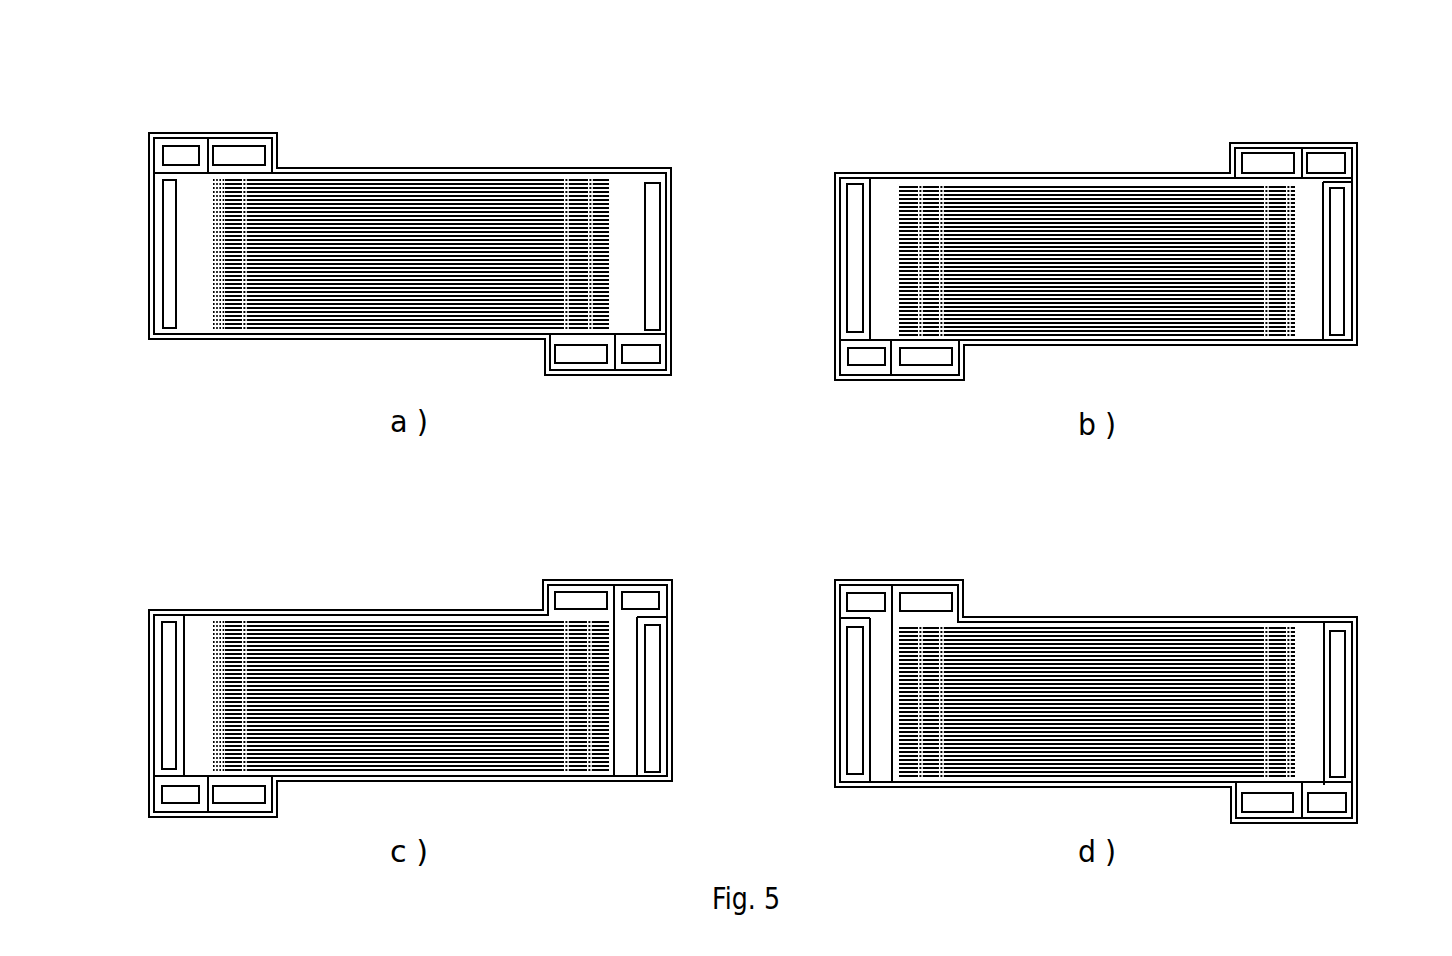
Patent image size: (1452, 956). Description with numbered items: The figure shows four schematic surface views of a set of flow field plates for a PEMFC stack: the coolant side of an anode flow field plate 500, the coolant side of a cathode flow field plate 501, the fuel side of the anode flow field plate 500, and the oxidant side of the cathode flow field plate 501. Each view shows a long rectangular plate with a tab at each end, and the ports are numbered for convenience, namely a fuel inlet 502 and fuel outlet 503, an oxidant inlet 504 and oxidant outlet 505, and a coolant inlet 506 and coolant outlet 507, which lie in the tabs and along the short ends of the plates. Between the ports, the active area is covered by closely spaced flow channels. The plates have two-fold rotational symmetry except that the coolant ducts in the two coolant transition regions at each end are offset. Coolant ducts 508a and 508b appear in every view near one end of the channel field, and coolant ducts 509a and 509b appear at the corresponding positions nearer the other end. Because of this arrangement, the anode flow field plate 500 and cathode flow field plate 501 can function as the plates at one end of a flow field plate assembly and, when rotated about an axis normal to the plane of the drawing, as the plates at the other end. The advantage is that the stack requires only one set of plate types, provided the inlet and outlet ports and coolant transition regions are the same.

The anode flow field plate 500 is at (694, 165).
The cathode flow field plate 501 is at (1381, 169).
The fuel inlet 502 is at (183, 155).
The fuel outlet 503 is at (642, 365).
The oxidant inlet 504 is at (170, 252).
The oxidant outlet 505 is at (655, 255).
The coolant inlet 506 is at (248, 155).
The coolant outlet 507 is at (580, 365).
The coolant duct 508a is at (591, 183).
The coolant duct 508b is at (245, 330).
The coolant duct 509a is at (565, 183).
The coolant duct 509b is at (222, 330).